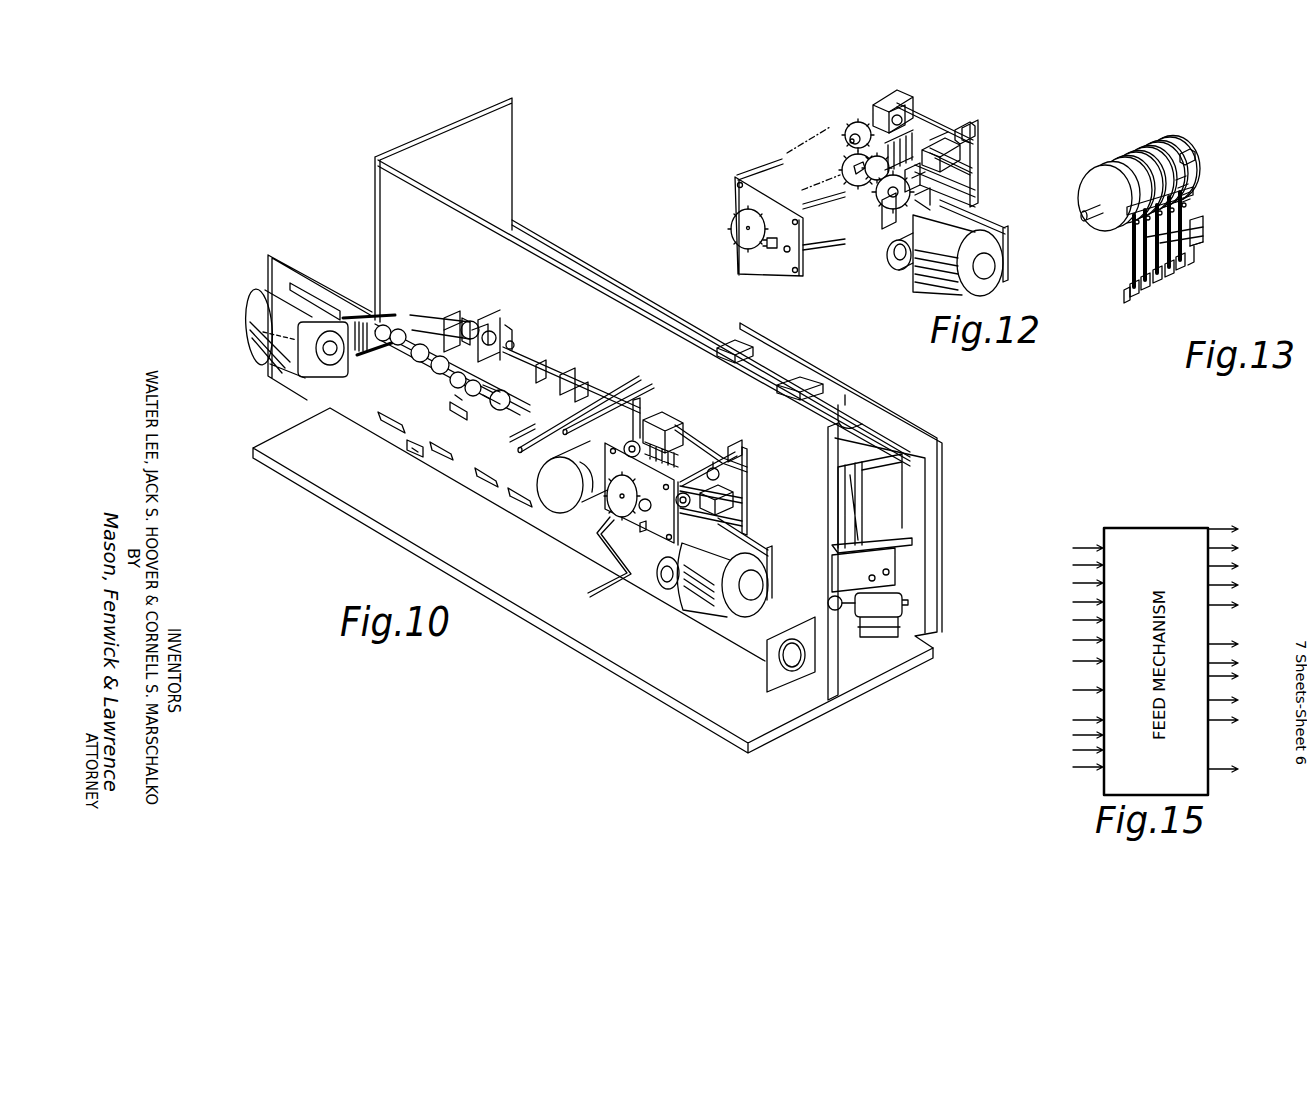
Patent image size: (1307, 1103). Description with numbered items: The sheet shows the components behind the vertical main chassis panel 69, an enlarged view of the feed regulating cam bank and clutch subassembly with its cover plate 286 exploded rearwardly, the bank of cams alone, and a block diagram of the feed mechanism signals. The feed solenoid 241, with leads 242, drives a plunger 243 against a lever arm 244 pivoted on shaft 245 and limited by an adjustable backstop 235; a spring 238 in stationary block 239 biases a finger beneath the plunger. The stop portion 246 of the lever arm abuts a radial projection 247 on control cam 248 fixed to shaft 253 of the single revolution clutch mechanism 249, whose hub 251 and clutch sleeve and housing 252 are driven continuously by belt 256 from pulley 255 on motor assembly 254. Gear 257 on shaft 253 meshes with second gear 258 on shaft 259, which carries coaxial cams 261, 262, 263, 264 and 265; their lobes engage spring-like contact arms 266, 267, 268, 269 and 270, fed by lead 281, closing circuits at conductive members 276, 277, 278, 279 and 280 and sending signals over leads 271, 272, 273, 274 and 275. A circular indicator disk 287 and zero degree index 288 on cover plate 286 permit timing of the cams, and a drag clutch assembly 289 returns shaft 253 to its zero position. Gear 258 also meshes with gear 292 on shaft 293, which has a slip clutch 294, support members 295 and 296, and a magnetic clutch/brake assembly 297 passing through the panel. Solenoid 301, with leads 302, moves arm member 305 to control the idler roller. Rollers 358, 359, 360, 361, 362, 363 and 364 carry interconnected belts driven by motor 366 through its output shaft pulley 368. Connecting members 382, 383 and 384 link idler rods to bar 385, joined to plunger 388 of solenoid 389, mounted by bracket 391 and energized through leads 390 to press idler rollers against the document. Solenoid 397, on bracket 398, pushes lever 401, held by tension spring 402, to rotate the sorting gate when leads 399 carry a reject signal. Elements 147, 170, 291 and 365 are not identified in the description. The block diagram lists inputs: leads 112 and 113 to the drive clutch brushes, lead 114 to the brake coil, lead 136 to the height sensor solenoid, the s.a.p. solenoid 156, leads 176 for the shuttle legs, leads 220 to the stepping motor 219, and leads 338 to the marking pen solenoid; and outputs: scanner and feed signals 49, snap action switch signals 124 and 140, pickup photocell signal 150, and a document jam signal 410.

In FIG. 10, the vertical main chassis panel 69 is at (828, 418).
In FIG. 10, the guide rod 147 is at (648, 388).
In FIG. 10, the guide rod 170 is at (622, 385).
In FIG. 10, the stepping motor 219 is at (560, 455).
In FIG. 10, the leads to stepping motor 220 is at (607, 507).
In FIG. 15, the leads to stepping motor 220 is at (1073, 690).
In FIG. 10, the adjustable backstop 235 is at (748, 456).
In FIG. 15, the adjustable backstop 235 is at (1239, 605).
In FIG. 10, the stationary block 239 is at (744, 516).
In FIG. 12, the stationary block 239 is at (979, 135).
In FIG. 10, the feed solenoid 241 is at (744, 496).
In FIG. 12, the feed solenoid 241 is at (966, 186).
In FIG. 10, the lever arm 244 is at (703, 478).
In FIG. 12, the lever arm 244 is at (927, 163).
In FIG. 10, the shaft 245 is at (736, 445).
In FIG. 10, the shaft of the single revolution clutch 253 is at (676, 506).
In FIG. 12, the shaft of the single revolution clutch 253 is at (882, 212).
In FIG. 10, the motor assembly 254 is at (740, 568).
In FIG. 12, the motor assembly 254 is at (930, 230).
In FIG. 10, the pulley 255 is at (665, 585).
In FIG. 12, the pulley 255 is at (897, 270).
In FIG. 10, the circular indicator disk 287 is at (613, 502).
In FIG. 12, the circular indicator disk 287 is at (740, 222).
In FIG. 10, the zero degree index 288 is at (642, 512).
In FIG. 12, the zero degree index 288 is at (766, 246).
In FIG. 10, the support member 296 is at (680, 427).
In FIG. 12, the support member 296 is at (890, 90).
In FIG. 10, the magnetic clutch/brake assembly 297 is at (705, 445).
In FIG. 12, the magnetic clutch/brake assembly 297 is at (906, 101).
In FIG. 10, the solenoid 301 is at (640, 405).
In FIG. 10, the arm member 305 is at (665, 410).
In FIG. 10, the roller 358 is at (533, 425).
In FIG. 10, the roller 359 is at (502, 404).
In FIG. 10, the roller 360 is at (460, 410).
In FIG. 10, the roller 361 is at (440, 374).
In FIG. 10, the roller 362 is at (418, 362).
In FIG. 10, the roller 363 is at (398, 345).
In FIG. 10, the roller 364 is at (383, 341).
In FIG. 10, the belt 365 is at (457, 357).
In FIG. 10, the motor 366 is at (250, 335).
In FIG. 10, the output shaft pulley 368 is at (345, 345).
In FIG. 10, the connecting member 382 is at (580, 393).
In FIG. 10, the connecting member 383 is at (542, 370).
In FIG. 10, the connecting member 384 is at (525, 355).
In FIG. 10, the bar 385 is at (568, 380).
In FIG. 10, the plunger 388 is at (514, 345).
In FIG. 10, the solenoid 389 is at (503, 322).
In FIG. 10, the bracket 391 is at (510, 330).
In FIG. 10, the solenoid 397 is at (466, 320).
In FIG. 10, the bracket 398 is at (478, 330).
In FIG. 10, the lever 401 is at (452, 330).
In FIG. 10, the tension spring 402 is at (452, 316).
In FIG. 12, the spring 238 is at (978, 152).
In FIG. 12, the leads 242 is at (975, 164).
In FIG. 15, the leads 242 is at (1073, 661).
In FIG. 12, the plunger 243 is at (960, 194).
In FIG. 12, the stop portion 246 is at (920, 163).
In FIG. 12, the radial projection 247 is at (890, 178).
In FIG. 12, the control cam 248 is at (900, 190).
In FIG. 12, the single revolution clutch mechanism 249 is at (918, 208).
In FIG. 12, the hub 251 is at (905, 200).
In FIG. 12, the clutch sleeve and housing 252 is at (952, 148).
In FIG. 12, the belt 256 is at (915, 203).
In FIG. 12, the gear 257 is at (874, 184).
In FIG. 12, the second gear 258 is at (841, 162).
In FIG. 12, the shaft 259 is at (745, 229).
In FIG. 13, the shaft 259 is at (1090, 218).
In FIG. 12, the cover plate 286 is at (735, 190).
In FIG. 12, the drag clutch assembly 289 is at (880, 207).
In FIG. 12, the hole 291 is at (785, 252).
In FIG. 12, the gear 292 is at (850, 128).
In FIG. 12, the shaft 293 is at (850, 137).
In FIG. 12, the slip clutch 294 is at (848, 141).
In FIG. 12, the support member 295 is at (873, 106).
In FIG. 13, the cam 261 is at (1103, 166).
In FIG. 13, the cam 262 is at (1122, 158).
In FIG. 13, the cam 263 is at (1134, 153).
In FIG. 13, the cam 264 is at (1146, 148).
In FIG. 13, the cam 265 is at (1160, 143).
In FIG. 13, the spring-like electrically conductive contact arm 266 is at (1192, 152).
In FIG. 13, the spring-like electrically conductive contact arm 267 is at (1183, 180).
In FIG. 13, the spring-like electrically conductive contact arm 268 is at (1186, 188).
In FIG. 13, the spring-like electrically conductive contact arm 269 is at (1188, 204).
In FIG. 13, the spring-like electrically conductive contact arm 270 is at (1188, 196).
In FIG. 13, the lead 271 is at (1134, 297).
In FIG. 15, the lead 271 is at (1238, 644).
In FIG. 13, the lead 272 is at (1146, 290).
In FIG. 15, the lead 272 is at (1239, 663).
In FIG. 13, the lead 273 is at (1158, 283).
In FIG. 15, the lead 273 is at (1239, 676).
In FIG. 13, the lead 274 is at (1170, 277).
In FIG. 15, the lead 274 is at (1239, 700).
In FIG. 13, the lead 275 is at (1181, 270).
In FIG. 15, the lead 275 is at (1239, 720).
In FIG. 13, the electrically conductive member 276 is at (1198, 220).
In FIG. 13, the electrically conductive member 277 is at (1203, 230).
In FIG. 13, the electrically conductive member 278 is at (1203, 240).
In FIG. 13, the electrically conductive member 279 is at (1203, 246).
In FIG. 13, the electrically conductive member 280 is at (1196, 255).
In FIG. 13, the lead 281 is at (1125, 297).
In FIG. 15, the scanner and feed signals 49 is at (1235, 529).
In FIG. 15, the leads to brushes for drive clutch 112 is at (1075, 548).
In FIG. 15, the leads to brushes for drive clutch 113 is at (1075, 565).
In FIG. 15, the leads to magnetic coil of brake housing 114 is at (1075, 583).
In FIG. 15, the snap action switch signal to activate height sensor 124 is at (1238, 548).
In FIG. 15, the leads to height sensor deactivating solenoid 136 is at (1074, 602).
In FIG. 15, the snap action switch signal denoting tray empty 140 is at (1238, 566).
In FIG. 15, the photocell signal showing document pickup 150 is at (1238, 585).
In FIG. 15, the solenoid controlling the s.a.p. 156 is at (1074, 620).
In FIG. 15, the leads to shuttle-leg solenoid 176 is at (1074, 640).
In FIG. 15, the leads 302 is at (1073, 720).
In FIG. 15, the leads to marking pen solenoid 338 is at (1073, 735).
In FIG. 15, the leads 390 is at (1073, 750).
In FIG. 15, the leads 399 is at (1073, 767).
In FIG. 15, the document jam signal 410 is at (1238, 769).